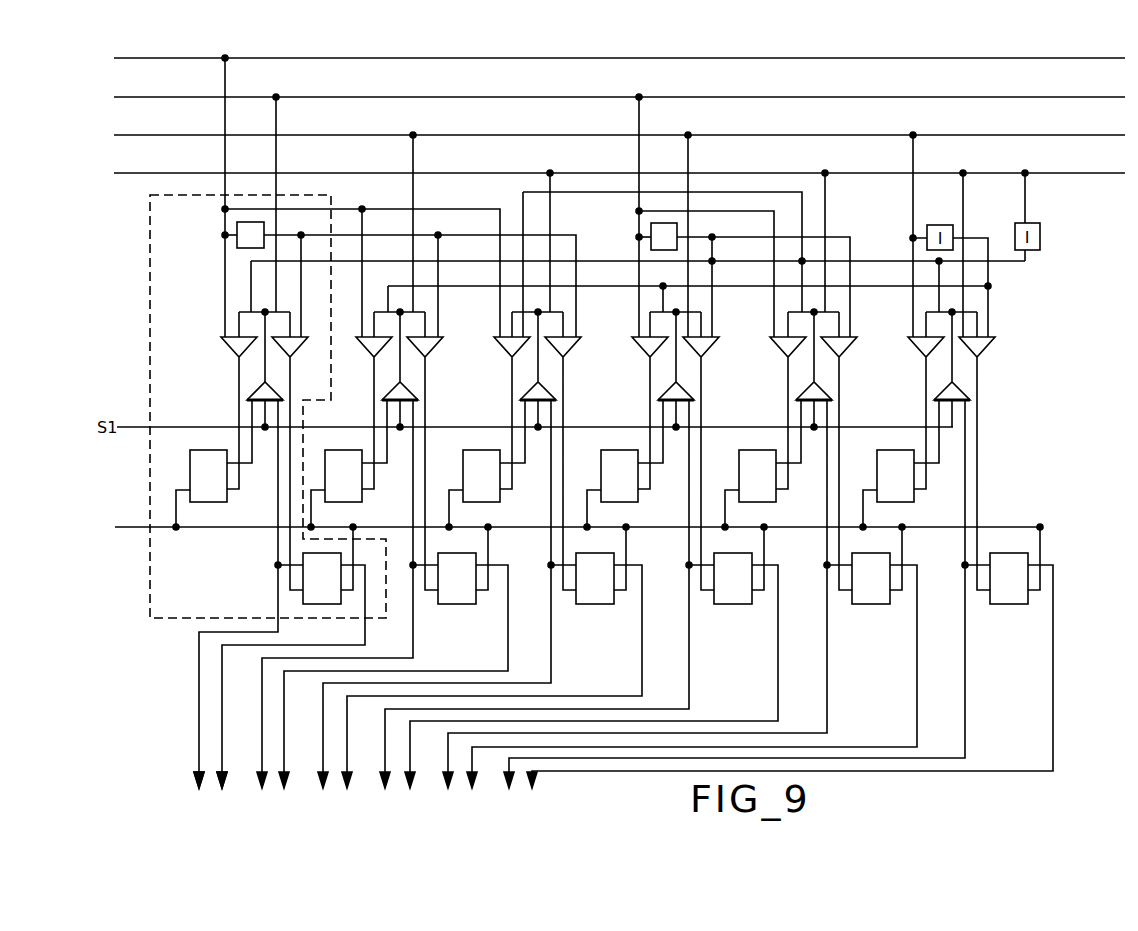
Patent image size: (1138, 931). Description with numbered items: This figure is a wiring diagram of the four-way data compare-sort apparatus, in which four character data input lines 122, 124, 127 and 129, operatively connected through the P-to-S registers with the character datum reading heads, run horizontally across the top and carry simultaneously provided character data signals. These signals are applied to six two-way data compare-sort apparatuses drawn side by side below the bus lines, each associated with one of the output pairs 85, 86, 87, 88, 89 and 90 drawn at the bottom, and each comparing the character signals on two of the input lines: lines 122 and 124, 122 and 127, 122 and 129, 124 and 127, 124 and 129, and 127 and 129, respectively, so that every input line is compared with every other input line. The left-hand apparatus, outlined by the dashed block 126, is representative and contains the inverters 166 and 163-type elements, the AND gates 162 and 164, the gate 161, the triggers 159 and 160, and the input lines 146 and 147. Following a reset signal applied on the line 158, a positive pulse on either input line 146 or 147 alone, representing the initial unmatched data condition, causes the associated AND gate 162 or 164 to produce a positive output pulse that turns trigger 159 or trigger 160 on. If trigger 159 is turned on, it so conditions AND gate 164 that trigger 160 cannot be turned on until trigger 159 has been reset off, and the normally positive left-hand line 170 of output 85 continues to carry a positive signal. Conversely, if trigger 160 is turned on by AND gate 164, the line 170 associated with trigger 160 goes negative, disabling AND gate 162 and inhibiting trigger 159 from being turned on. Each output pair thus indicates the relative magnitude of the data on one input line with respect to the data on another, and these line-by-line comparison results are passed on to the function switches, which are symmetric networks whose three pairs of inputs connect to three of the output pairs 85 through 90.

The character data input line 122 is at (174, 57).
The character data input line 124 is at (172, 96).
The character data input line 127 is at (170, 134).
The character data input line 129 is at (170, 172).
The decoder cell 126 is at (150, 224).
The input line 146 is at (225, 188).
The input line 147 is at (276, 180).
The inverter 166 is at (234, 243).
The inverter 163 is at (650, 245).
The AND gate 162 is at (233, 347).
The AND gate 164 is at (288, 347).
The OR gate 161 is at (262, 391).
The trigger 159 is at (190, 470).
The reset signal line 158 is at (250, 530).
The trigger 160 is at (296, 598).
The line 170 is at (199, 664).
The output 85 is at (191, 797).
The output 86 is at (254, 797).
The output 87 is at (317, 797).
The output 88 is at (379, 797).
The output 89 is at (442, 797).
The output 90 is at (503, 797).